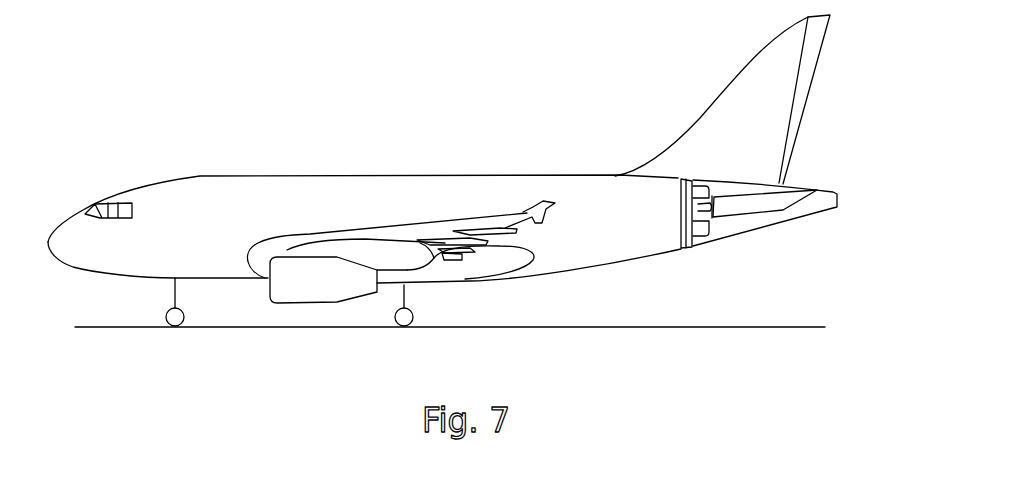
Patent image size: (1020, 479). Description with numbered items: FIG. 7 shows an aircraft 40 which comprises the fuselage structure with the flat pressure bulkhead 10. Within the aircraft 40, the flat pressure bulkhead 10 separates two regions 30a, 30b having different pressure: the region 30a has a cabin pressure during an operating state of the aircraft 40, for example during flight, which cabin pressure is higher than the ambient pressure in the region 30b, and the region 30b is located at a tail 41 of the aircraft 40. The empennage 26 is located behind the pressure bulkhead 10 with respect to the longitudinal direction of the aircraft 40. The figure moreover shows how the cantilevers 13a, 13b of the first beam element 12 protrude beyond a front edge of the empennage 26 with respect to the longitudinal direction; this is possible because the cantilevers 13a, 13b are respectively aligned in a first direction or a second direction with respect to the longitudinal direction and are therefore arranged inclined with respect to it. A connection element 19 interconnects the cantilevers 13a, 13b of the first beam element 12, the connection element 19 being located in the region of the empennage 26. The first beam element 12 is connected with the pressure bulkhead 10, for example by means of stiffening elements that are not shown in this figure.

The aircraft 40 is at (132, 149).
The region 30a is at (602, 218).
The cantilever 13a is at (704, 190).
The region 30b is at (745, 187).
The empennage 26 is at (795, 185).
The connection element 19 is at (720, 215).
The pressure bulkhead 10 is at (678, 228).
The first beam element 12 is at (703, 245).
The cantilever 13b is at (717, 229).
The tail 41 is at (852, 202).